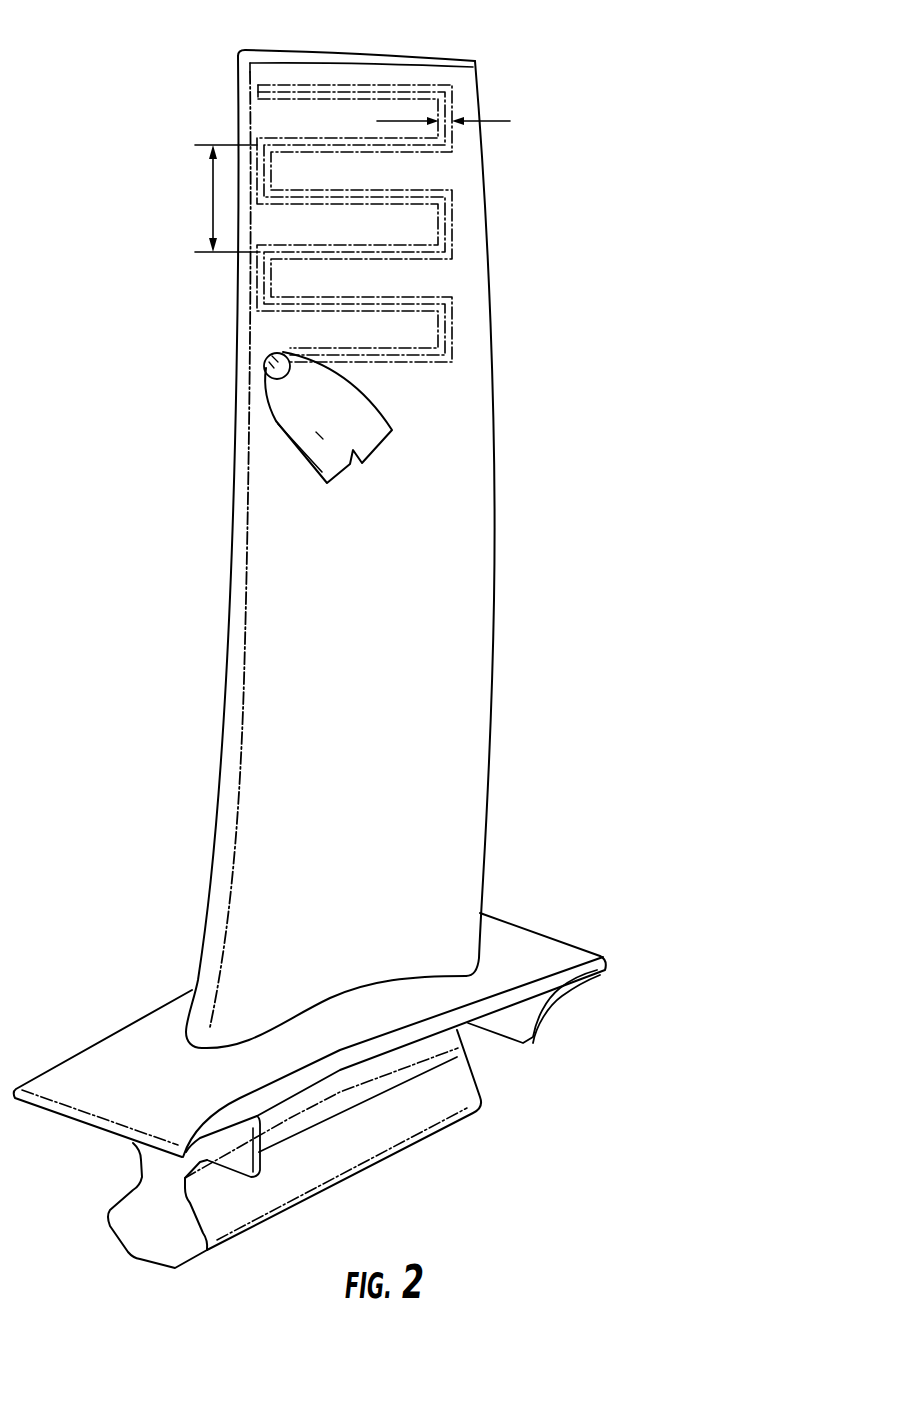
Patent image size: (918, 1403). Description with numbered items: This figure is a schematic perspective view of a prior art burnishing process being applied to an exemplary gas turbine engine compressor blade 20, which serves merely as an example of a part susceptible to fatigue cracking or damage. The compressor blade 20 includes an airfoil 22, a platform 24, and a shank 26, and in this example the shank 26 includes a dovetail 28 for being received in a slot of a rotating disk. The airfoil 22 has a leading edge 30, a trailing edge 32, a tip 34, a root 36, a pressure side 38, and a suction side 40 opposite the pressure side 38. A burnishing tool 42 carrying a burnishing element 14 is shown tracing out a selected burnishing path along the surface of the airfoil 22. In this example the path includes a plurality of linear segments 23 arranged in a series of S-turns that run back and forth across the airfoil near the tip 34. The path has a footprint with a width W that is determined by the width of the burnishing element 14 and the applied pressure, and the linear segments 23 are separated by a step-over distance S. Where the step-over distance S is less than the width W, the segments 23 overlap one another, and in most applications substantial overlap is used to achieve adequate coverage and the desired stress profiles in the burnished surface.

The compressor blade 20 is at (163, 439).
The airfoil 22 is at (431, 647).
The platform 24 is at (548, 948).
The shank 26 is at (455, 1046).
The dovetail 28 is at (162, 1243).
The leading edge 30 is at (247, 594).
The trailing edge 32 is at (495, 500).
The tip 34 is at (397, 55).
The root 36 is at (413, 968).
The pressure side 38 is at (361, 784).
The suction side 40 is at (257, 725).
The burnishing tool 42 is at (350, 405).
The burnishing element 14 is at (263, 357).
The linear segments 23 is at (447, 293).
The width W is at (500, 121).
The step-over distance S is at (213, 192).